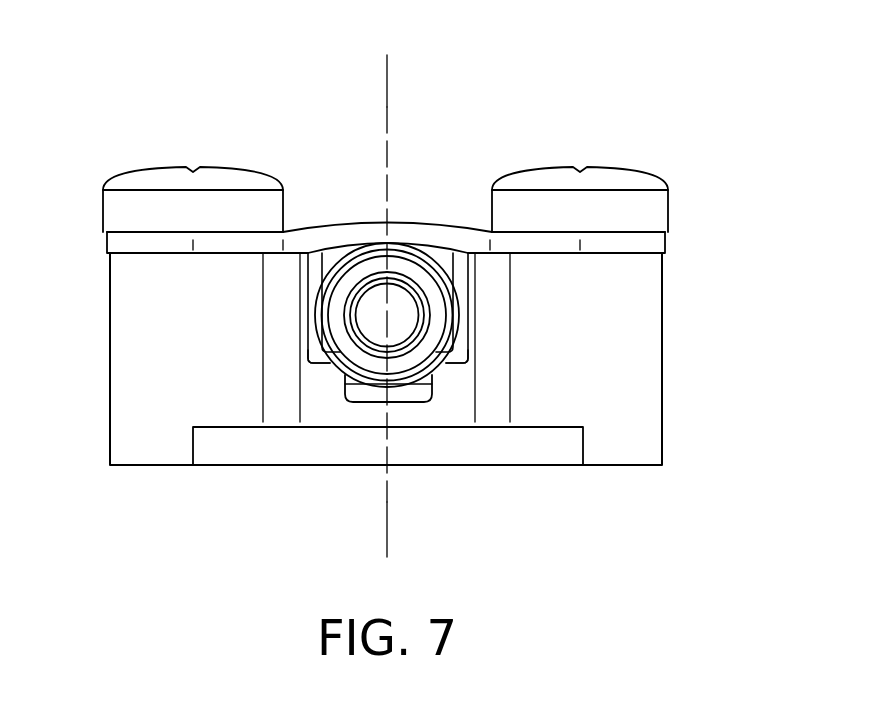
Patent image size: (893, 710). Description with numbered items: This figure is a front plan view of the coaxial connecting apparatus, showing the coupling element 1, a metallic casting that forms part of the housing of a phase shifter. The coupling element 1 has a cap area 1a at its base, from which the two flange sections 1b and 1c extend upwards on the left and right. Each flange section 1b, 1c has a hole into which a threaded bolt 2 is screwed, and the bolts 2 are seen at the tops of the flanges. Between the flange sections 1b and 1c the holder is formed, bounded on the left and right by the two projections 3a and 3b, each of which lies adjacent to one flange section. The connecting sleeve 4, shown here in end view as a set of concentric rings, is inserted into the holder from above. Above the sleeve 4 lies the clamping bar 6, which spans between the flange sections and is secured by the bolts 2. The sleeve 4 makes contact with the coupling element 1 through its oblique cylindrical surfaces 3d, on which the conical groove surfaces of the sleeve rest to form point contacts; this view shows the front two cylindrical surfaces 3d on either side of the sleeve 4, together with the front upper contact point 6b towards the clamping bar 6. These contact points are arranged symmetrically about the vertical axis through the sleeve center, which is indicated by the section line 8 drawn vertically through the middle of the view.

The coupling element 1 is at (669, 429).
The cap area 1a is at (296, 452).
The flange section 1b is at (130, 355).
The flange section 1c is at (650, 310).
The threaded bolt 2 is at (190, 168).
The projection 3a is at (305, 252).
The projection 3b is at (470, 252).
The cylindrical surface 3d is at (338, 372).
The connecting sleeve 4 is at (404, 382).
The clamping bar 6 is at (369, 214).
The contact point 6b is at (398, 244).
The section line 8- 8 is at (412, 557).